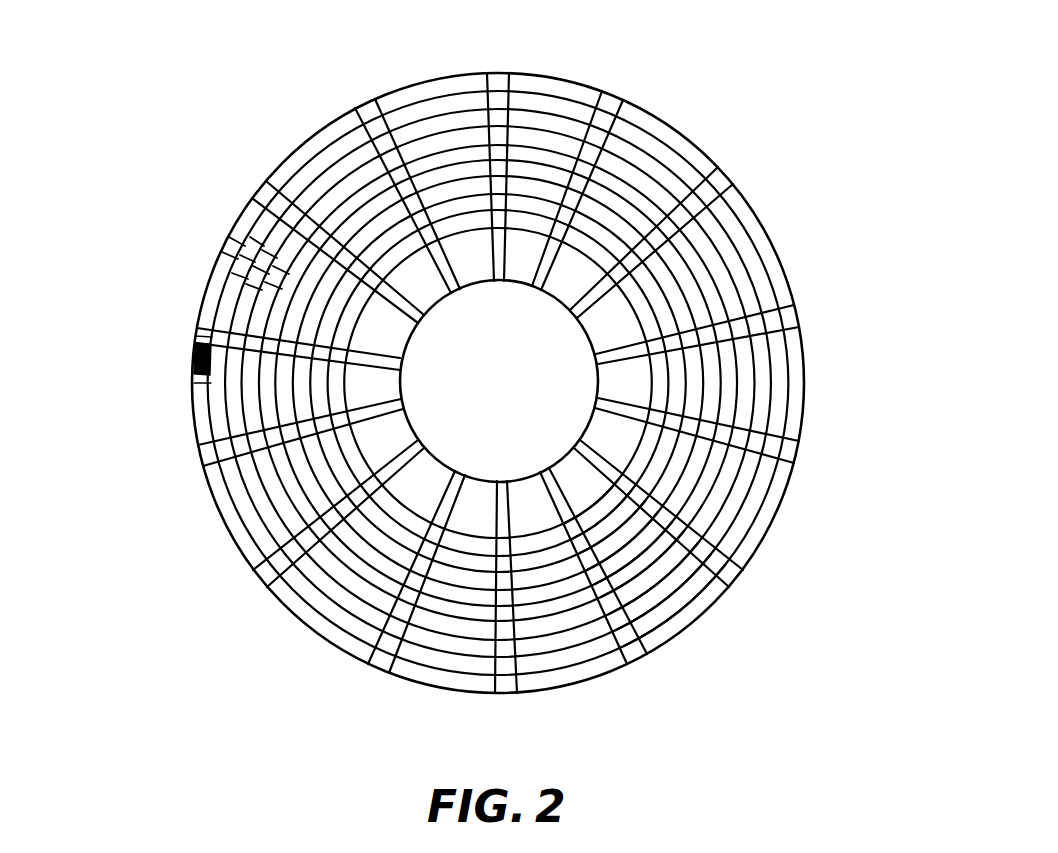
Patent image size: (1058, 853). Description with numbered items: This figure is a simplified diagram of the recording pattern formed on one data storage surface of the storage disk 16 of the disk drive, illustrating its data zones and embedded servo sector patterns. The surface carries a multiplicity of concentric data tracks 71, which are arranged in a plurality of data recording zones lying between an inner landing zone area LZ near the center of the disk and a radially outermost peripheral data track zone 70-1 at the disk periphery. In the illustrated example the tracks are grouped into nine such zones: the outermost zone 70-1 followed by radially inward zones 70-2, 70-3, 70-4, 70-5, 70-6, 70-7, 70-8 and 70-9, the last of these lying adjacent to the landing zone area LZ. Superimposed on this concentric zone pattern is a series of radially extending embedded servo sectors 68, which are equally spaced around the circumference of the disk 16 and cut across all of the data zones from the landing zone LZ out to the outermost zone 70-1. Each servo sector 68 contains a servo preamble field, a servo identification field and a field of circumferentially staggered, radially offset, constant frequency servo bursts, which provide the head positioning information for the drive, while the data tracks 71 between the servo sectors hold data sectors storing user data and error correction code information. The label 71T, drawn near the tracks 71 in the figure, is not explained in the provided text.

The storage disk 16 is at (132, 626).
The embedded servo sectors 68 is at (500, 70).
The outermost data zone 70-1 is at (680, 135).
The data zone 70-2 is at (760, 260).
The data zone 70-3 is at (767, 378).
The data zone 70-4 is at (725, 493).
The data zone 70-5 is at (690, 618).
The data zone 70-6 is at (320, 625).
The data zone 70-7 is at (333, 487).
The data zone 70-8 is at (318, 398).
The data zone 70-9 is at (267, 250).
The concentric data tracks 71 is at (196, 358).
The defective tracks 71T is at (214, 296).
The inner landing zone area LZ is at (423, 270).